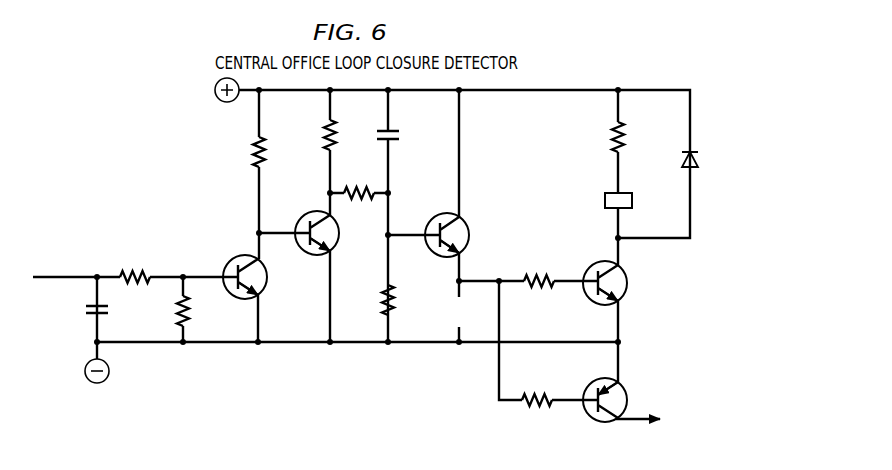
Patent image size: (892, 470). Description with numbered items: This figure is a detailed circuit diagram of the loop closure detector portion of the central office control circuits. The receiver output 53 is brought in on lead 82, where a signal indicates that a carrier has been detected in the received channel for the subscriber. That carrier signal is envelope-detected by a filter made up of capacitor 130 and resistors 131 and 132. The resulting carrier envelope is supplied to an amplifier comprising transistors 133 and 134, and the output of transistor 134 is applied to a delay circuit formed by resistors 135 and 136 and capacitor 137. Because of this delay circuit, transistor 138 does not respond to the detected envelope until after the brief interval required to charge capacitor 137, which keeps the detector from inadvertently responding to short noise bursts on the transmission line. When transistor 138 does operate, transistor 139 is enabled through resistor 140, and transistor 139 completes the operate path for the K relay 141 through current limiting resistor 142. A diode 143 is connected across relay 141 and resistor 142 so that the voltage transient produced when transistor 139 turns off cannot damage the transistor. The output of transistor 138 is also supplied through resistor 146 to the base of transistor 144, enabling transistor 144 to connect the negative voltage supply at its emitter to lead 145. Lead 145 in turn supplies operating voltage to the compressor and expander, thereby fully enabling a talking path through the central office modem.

The receiver output 53 is at (63, 273).
The lead 82 is at (42, 282).
The capacitor 130 is at (107, 312).
The resistor 131 is at (140, 266).
The resistor 132 is at (194, 311).
The transistor 133 is at (236, 277).
The transistor 134 is at (309, 233).
The resistor 135 is at (359, 182).
The resistor 136 is at (375, 300).
The capacitor 137 is at (398, 137).
The transistor 138 is at (439, 235).
The transistor 139 is at (616, 291).
The resistor 140 is at (528, 270).
The K relay 141 is at (614, 215).
The current limiting resistor 142 is at (605, 141).
The diode 143 is at (702, 162).
The transistor 144 is at (601, 383).
The lead 145 is at (629, 424).
The resistor 146 is at (560, 414).